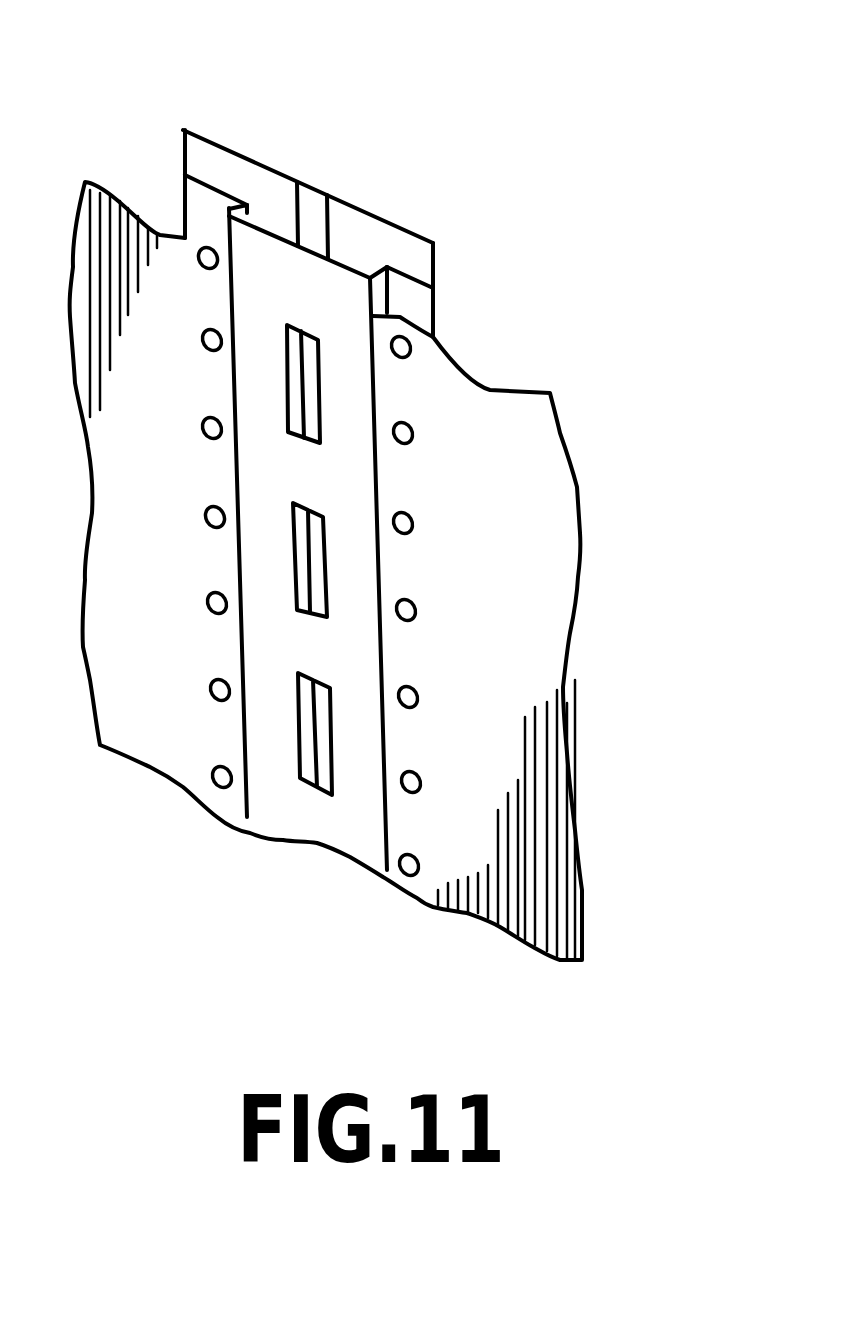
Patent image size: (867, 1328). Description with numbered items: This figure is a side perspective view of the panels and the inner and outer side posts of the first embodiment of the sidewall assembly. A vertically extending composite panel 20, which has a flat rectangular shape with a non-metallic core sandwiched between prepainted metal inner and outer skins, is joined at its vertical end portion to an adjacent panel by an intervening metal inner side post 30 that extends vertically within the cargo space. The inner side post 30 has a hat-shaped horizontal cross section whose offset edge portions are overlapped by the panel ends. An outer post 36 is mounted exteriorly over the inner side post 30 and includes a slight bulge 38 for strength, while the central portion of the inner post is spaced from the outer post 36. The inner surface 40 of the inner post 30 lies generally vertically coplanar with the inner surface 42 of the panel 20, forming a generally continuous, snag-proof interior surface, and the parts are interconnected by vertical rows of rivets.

The composite panel 20 is at (532, 593).
The inner side post 30 is at (312, 807).
The outer post 36 is at (373, 228).
The bulge 38 is at (315, 183).
The inner surface of inner post 40 is at (317, 492).
The inner surface of panel 42 is at (177, 503).